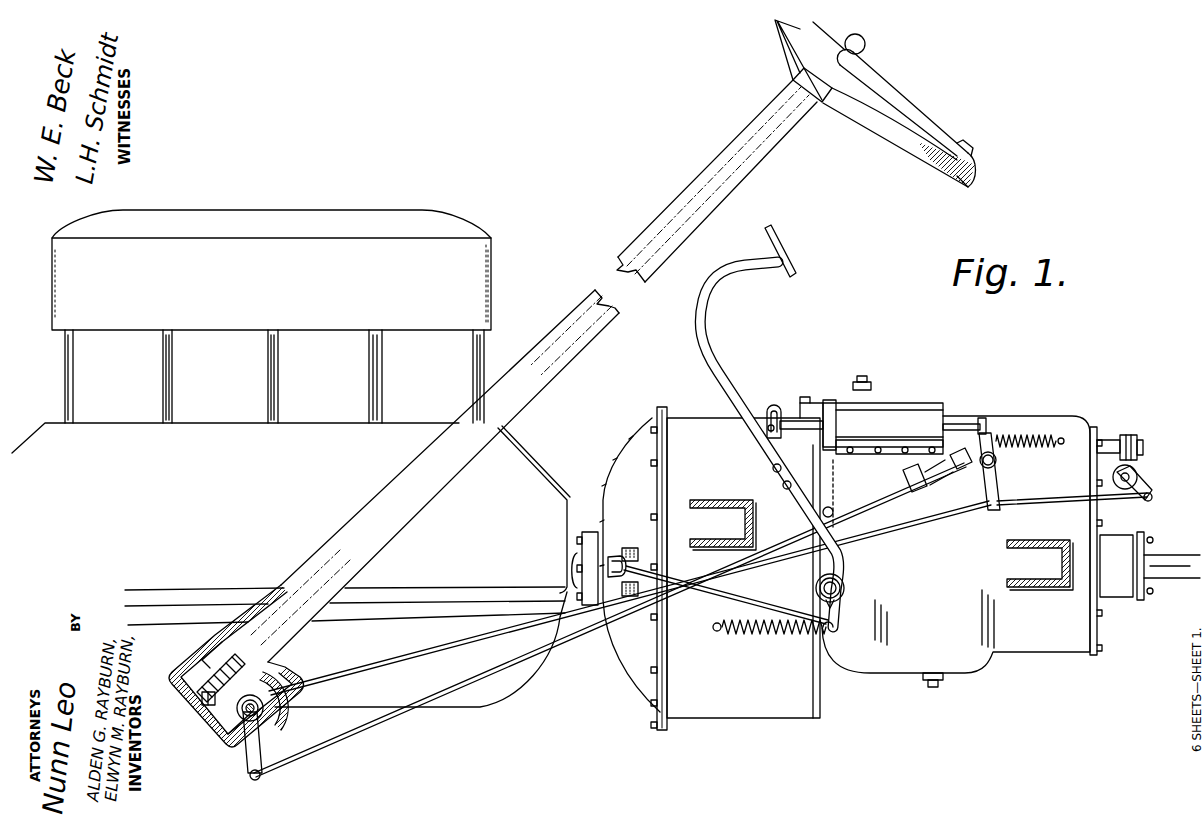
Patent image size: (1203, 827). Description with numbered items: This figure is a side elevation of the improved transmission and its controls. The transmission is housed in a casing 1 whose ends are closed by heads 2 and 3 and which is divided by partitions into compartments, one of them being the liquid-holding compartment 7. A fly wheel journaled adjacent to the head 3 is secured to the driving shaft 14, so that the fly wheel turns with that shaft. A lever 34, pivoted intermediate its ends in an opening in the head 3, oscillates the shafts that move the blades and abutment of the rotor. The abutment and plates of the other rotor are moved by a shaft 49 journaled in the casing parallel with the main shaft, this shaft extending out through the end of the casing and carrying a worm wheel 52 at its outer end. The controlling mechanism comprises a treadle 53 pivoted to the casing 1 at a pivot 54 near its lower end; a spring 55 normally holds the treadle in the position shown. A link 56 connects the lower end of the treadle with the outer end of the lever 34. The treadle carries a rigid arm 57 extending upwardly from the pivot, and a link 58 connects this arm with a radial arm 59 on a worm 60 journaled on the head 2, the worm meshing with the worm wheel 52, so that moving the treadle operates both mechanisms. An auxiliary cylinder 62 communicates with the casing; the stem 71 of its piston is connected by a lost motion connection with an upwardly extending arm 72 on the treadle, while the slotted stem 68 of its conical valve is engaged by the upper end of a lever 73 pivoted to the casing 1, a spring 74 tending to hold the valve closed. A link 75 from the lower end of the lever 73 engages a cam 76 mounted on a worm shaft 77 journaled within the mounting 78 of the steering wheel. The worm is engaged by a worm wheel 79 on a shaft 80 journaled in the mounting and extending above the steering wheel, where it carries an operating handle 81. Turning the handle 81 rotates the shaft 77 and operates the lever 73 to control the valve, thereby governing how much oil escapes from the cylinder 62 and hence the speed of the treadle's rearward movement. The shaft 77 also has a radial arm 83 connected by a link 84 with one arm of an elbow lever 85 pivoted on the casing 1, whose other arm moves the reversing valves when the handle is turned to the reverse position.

The casing 1 is at (750, 720).
The head 2 is at (1102, 629).
The head 3 is at (620, 680).
The compartment 7 is at (1165, 557).
The driving shaft 14 is at (575, 566).
The lever 34 is at (607, 556).
The knob 49 is at (1141, 447).
The worm wheel 52 is at (1127, 432).
The treadle 53 is at (783, 426).
The pivot of the treadle 54 is at (845, 590).
The spring 55 is at (780, 638).
The link 56 is at (768, 608).
The arm 57 is at (831, 516).
The link 58 is at (1123, 500).
The radial arm 59 is at (1149, 489).
The worm 60 is at (1136, 468).
The auxiliary cylinder 62 is at (878, 405).
The stem 68 is at (963, 422).
The stem 71 is at (803, 418).
The arm 72 is at (776, 406).
The lever 73 is at (993, 478).
The spring 74 is at (1024, 432).
The link 75 is at (898, 537).
The cam 76 is at (283, 671).
The worm shaft 77 is at (262, 716).
The mounting of the steering wheel 78 is at (230, 727).
The worm wheel 79 is at (188, 672).
The shaft 80 is at (607, 304).
The operating handle 81 is at (917, 112).
The radial arm 83 is at (250, 768).
The link 84 is at (360, 735).
The elbow lever 85 is at (943, 473).